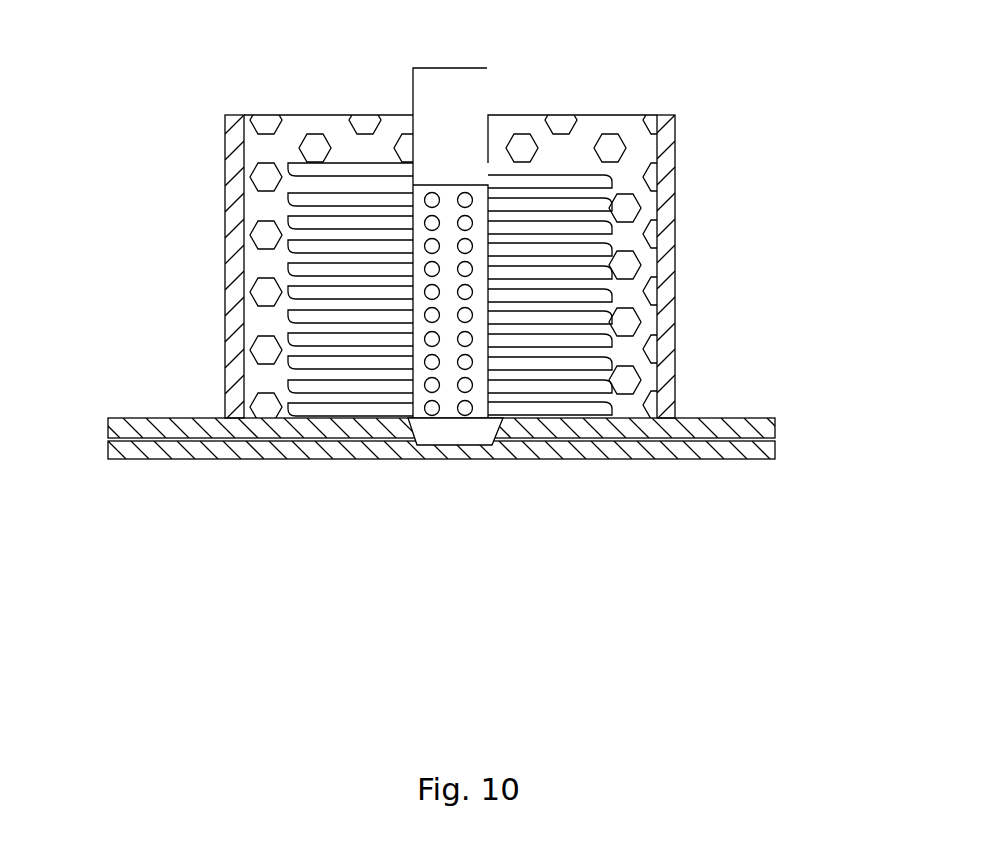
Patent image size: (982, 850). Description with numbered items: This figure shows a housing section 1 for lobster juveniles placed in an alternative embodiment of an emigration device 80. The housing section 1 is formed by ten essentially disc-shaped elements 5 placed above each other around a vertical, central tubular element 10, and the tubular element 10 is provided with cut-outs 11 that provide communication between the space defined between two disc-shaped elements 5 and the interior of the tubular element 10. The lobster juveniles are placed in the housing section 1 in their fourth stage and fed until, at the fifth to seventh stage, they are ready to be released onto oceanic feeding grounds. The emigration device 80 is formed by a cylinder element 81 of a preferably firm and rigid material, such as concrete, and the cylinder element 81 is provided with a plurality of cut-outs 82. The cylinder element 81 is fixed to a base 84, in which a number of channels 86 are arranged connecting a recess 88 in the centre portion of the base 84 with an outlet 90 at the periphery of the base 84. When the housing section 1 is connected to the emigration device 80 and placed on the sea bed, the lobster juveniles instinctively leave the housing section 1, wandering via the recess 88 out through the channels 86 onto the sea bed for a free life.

The housing section 1 is at (331, 289).
The disc-shaped element 5 is at (307, 275).
The tubular element 10 is at (437, 218).
The cut-outs 11 is at (433, 197).
The emigration device 80 is at (436, 263).
The cylinder element 81 is at (663, 262).
The cut-outs 82 is at (625, 271).
The base 84 is at (615, 447).
The channels 86 is at (225, 448).
The recess 88 is at (432, 438).
The outlet 90 is at (490, 531).